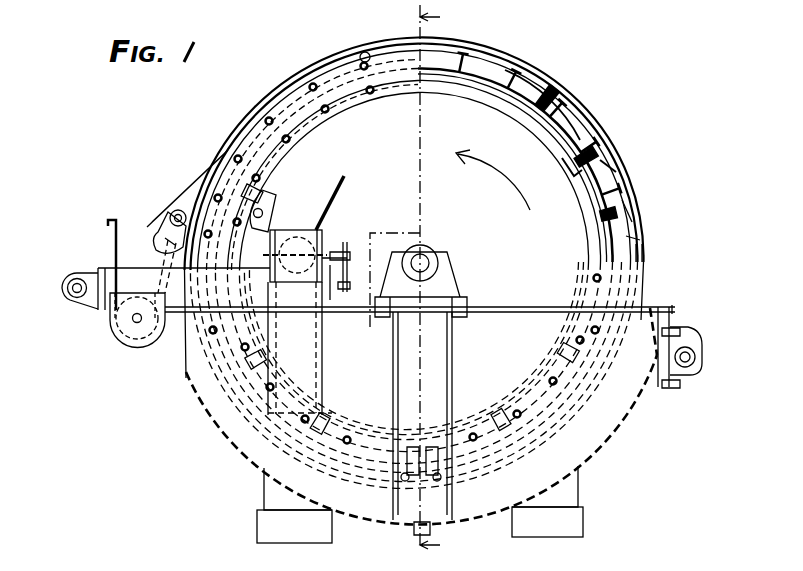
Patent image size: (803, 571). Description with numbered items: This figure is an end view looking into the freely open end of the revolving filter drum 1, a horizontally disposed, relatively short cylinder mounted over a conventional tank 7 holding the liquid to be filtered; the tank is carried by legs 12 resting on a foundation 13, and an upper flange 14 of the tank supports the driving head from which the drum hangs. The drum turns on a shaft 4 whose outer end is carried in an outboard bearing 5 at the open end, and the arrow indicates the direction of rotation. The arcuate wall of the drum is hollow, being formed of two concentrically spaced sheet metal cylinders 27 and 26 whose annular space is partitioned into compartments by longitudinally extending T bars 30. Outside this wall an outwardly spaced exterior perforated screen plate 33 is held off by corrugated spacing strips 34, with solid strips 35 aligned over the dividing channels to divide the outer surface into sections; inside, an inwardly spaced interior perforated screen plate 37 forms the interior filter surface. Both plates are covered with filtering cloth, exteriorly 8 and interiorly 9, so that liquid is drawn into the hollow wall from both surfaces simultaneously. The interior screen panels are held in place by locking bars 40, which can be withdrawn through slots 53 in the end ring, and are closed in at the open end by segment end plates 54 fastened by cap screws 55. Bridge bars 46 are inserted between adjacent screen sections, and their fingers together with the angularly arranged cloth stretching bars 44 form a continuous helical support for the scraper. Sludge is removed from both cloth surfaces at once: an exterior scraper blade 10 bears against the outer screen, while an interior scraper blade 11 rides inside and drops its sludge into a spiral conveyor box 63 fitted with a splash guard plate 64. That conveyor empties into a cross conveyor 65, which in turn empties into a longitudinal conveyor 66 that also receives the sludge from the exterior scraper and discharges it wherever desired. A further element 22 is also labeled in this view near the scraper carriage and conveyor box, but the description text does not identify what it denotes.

The drum 1 is at (574, 116).
The shaft 4 is at (424, 260).
The bearing 5 is at (470, 270).
The tank 7 is at (618, 428).
The exterior filtering cloth 8 is at (556, 82).
The interior filtering cloth 9 is at (533, 120).
The exterior scraper blade 10 is at (186, 192).
The interior scraper blade 11 is at (268, 196).
The legs 12 is at (585, 487).
The foundation 13 is at (585, 520).
The upper flange 14 is at (495, 314).
The gear box 22 is at (296, 240).
The inner sheet metal cylinder 26 is at (646, 215).
The outer sheet metal cylinder 27 is at (640, 193).
The T bars 30 is at (617, 162).
The exterior perforated screen plate 33 is at (650, 241).
The corrugated spacing strips 34 is at (600, 122).
The solid strips 35 is at (532, 74).
The interior perforated screen plate 37 is at (468, 80).
The locking bars 40 is at (466, 50).
The cloth stretching bars 44 is at (556, 134).
The bridge bars 46 is at (588, 172).
The slots 53 is at (384, 60).
The segment end plates 54 is at (379, 76).
The cap screws 55 is at (366, 53).
The spiral conveyor box 63 is at (328, 230).
The splash guard plate 64 is at (330, 192).
The cross conveyor 65 is at (264, 276).
The longitudinal conveyor 66 is at (140, 332).